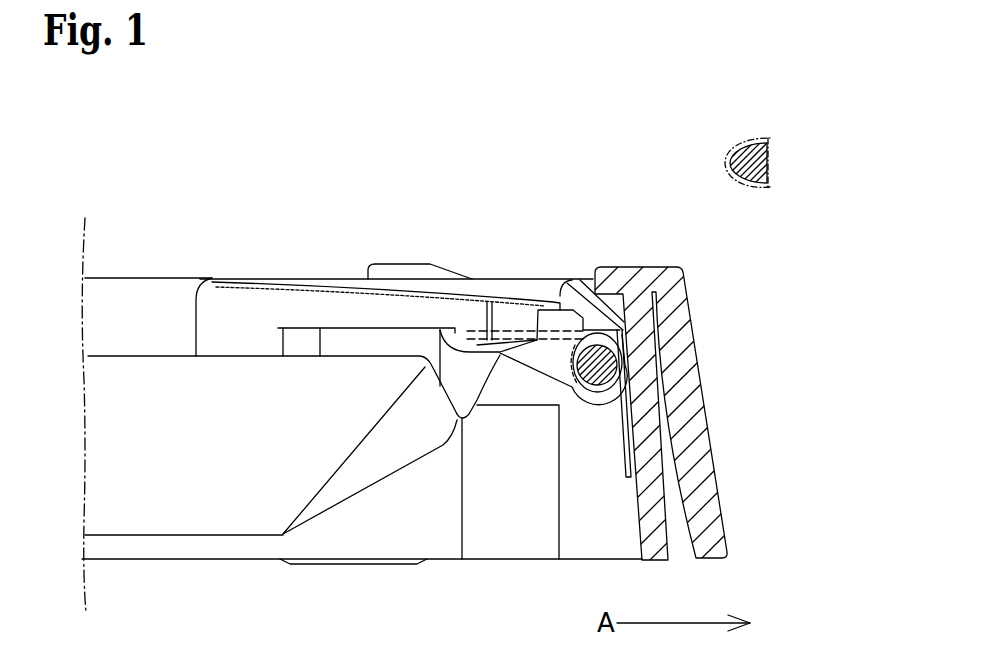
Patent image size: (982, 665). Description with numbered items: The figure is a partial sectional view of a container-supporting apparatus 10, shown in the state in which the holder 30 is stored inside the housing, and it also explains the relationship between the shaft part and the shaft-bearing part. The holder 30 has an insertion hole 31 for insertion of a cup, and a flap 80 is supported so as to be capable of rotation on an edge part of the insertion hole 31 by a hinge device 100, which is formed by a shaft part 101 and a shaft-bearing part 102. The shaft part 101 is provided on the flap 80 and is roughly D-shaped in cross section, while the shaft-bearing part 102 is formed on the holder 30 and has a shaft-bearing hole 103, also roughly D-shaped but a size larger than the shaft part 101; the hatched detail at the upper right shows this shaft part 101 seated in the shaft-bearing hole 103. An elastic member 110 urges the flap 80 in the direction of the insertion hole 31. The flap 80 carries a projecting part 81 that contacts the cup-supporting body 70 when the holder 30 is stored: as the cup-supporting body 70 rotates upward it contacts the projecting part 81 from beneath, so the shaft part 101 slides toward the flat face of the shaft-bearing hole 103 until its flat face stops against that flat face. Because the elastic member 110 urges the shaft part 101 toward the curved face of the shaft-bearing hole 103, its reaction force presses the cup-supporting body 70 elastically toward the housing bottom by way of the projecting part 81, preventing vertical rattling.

The container-supporting apparatus 10 is at (210, 200).
The holder 30 is at (705, 433).
The insertion hole 31 is at (372, 535).
The cup-supporting body 70 is at (207, 512).
The flap 80 is at (403, 270).
The projecting part 81 is at (470, 397).
The hinge device 100 is at (580, 420).
The shaft part 101 is at (730, 158).
The shaft-bearing part 102 is at (768, 158).
The shaft-bearing hole 103 is at (742, 188).
The elastic member 110 is at (627, 407).